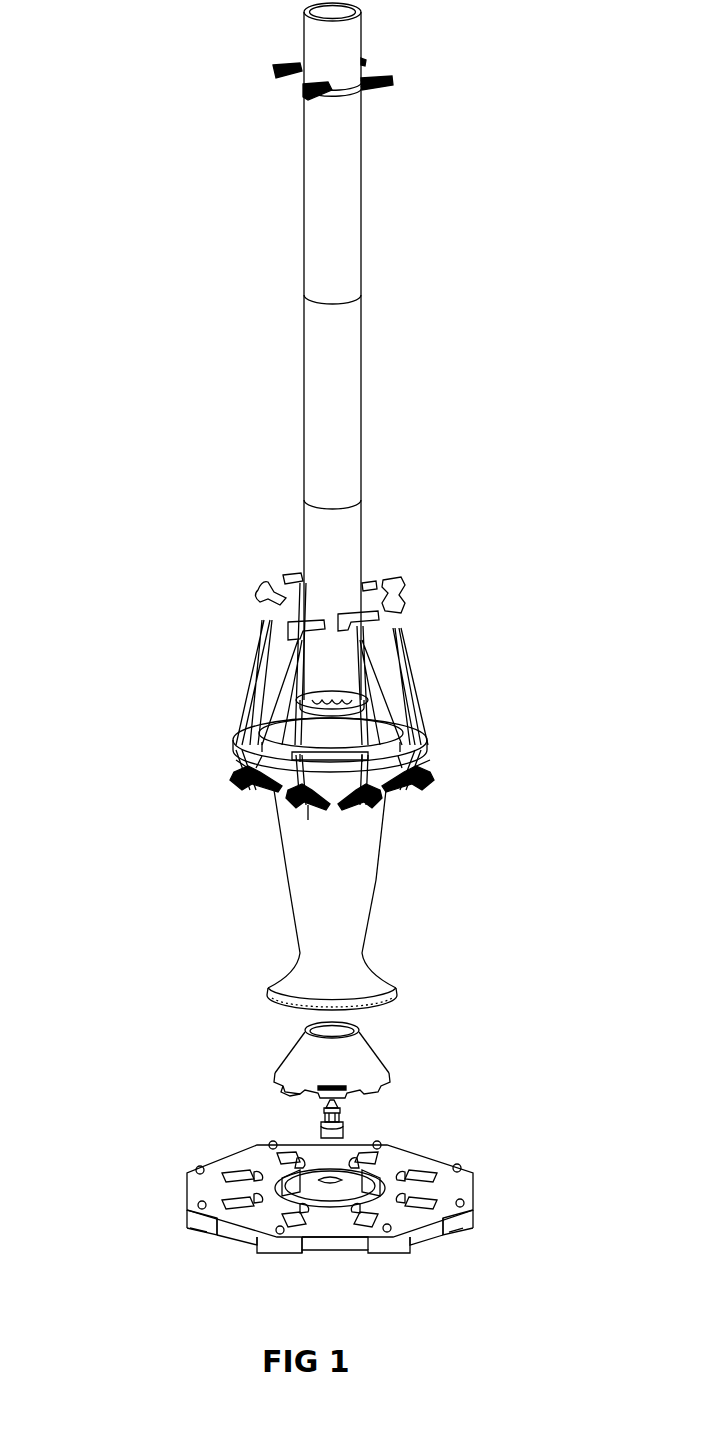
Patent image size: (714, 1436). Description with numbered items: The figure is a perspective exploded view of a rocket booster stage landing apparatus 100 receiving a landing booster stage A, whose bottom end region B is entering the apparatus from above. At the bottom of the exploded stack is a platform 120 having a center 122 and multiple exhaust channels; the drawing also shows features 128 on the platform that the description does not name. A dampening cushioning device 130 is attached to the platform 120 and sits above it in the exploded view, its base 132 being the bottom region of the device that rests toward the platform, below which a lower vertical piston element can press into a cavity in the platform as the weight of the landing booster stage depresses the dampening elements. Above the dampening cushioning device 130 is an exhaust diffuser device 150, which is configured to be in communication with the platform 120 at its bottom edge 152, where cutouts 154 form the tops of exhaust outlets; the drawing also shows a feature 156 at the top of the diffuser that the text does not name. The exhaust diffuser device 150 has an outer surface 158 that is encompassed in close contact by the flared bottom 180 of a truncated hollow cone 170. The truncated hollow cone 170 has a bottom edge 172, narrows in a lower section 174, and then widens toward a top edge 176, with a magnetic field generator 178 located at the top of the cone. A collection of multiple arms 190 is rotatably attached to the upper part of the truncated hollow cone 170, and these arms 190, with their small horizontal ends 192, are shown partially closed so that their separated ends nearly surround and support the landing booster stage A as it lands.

The landing booster stage A is at (404, 388).
The bottom end region B is at (336, 697).
The rocket booster stage landing apparatus 100 is at (236, 872).
The platform 120 is at (496, 1222).
The center 122 is at (345, 1183).
The base legs 128 is at (243, 1230).
The dampening cushioning device 130 is at (340, 1124).
The base 132 is at (364, 1135).
The exhaust diffuser device 150 is at (259, 1046).
The bottom edge 152 is at (390, 1085).
The cutouts 154 is at (278, 1090).
The lower cone top ring 156 is at (354, 1025).
The outer surface 158 is at (354, 1050).
The truncated hollow cone 170 is at (358, 853).
The bottom edge 172 is at (396, 1002).
The lower section 174 is at (340, 947).
The top edge 176 is at (425, 730).
The magnetic field generator 178 is at (388, 773).
The flared bottom 180 is at (348, 988).
The arms 190 is at (243, 685).
The small horizontal ends 192 is at (262, 603).